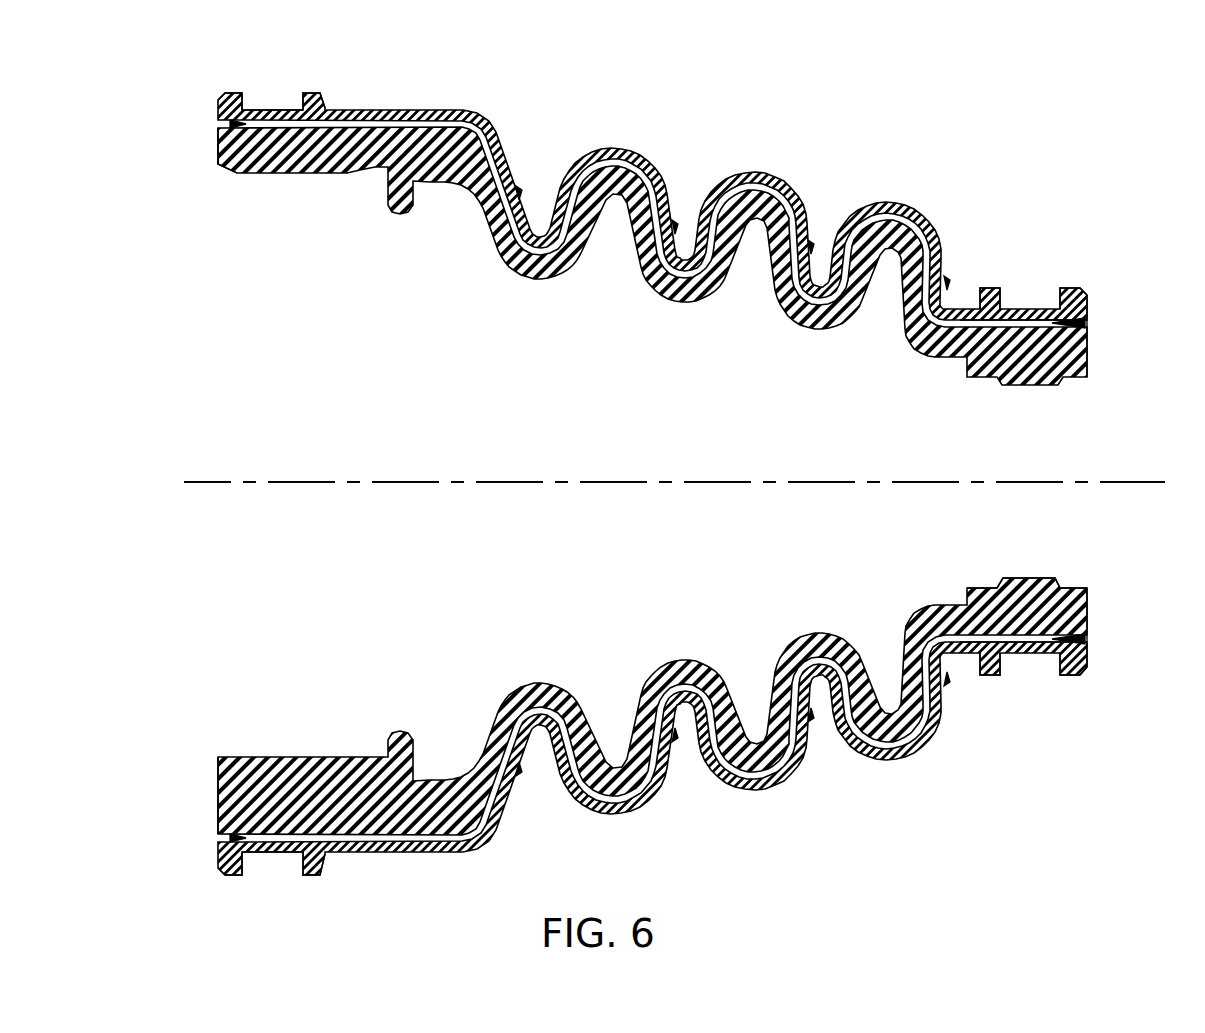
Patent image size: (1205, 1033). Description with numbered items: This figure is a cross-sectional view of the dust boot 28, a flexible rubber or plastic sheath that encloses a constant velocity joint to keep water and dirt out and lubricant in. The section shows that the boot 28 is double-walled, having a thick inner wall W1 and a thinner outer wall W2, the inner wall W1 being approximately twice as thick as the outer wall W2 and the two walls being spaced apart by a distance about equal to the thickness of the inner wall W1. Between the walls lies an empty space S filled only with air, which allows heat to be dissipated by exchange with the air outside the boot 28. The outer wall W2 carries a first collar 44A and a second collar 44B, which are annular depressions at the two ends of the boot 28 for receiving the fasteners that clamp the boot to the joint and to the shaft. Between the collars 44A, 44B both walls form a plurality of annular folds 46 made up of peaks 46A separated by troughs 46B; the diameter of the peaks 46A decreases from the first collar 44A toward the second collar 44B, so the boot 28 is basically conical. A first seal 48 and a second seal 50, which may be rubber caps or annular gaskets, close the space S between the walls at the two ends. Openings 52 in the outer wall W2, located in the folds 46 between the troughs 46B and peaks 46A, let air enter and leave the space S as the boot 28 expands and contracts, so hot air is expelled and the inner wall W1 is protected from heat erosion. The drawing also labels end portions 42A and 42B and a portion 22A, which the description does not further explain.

The boot 28 is at (112, 54).
The annular folds 46 is at (840, 126).
The peaks 46A is at (616, 146).
The troughs 46B is at (540, 280).
The inner wall W1 is at (300, 174).
The outer wall W2 is at (405, 109).
The first collar 44A is at (287, 108).
The second collar 44B is at (1042, 305).
The first end portion 42A is at (217, 152).
The second end portion 42B is at (1087, 293).
The mounting flange 22A is at (967, 600).
The first seal 48 is at (232, 124).
The second seal 50 is at (1087, 322).
The space S is at (1019, 323).
The openings 52 is at (517, 190).